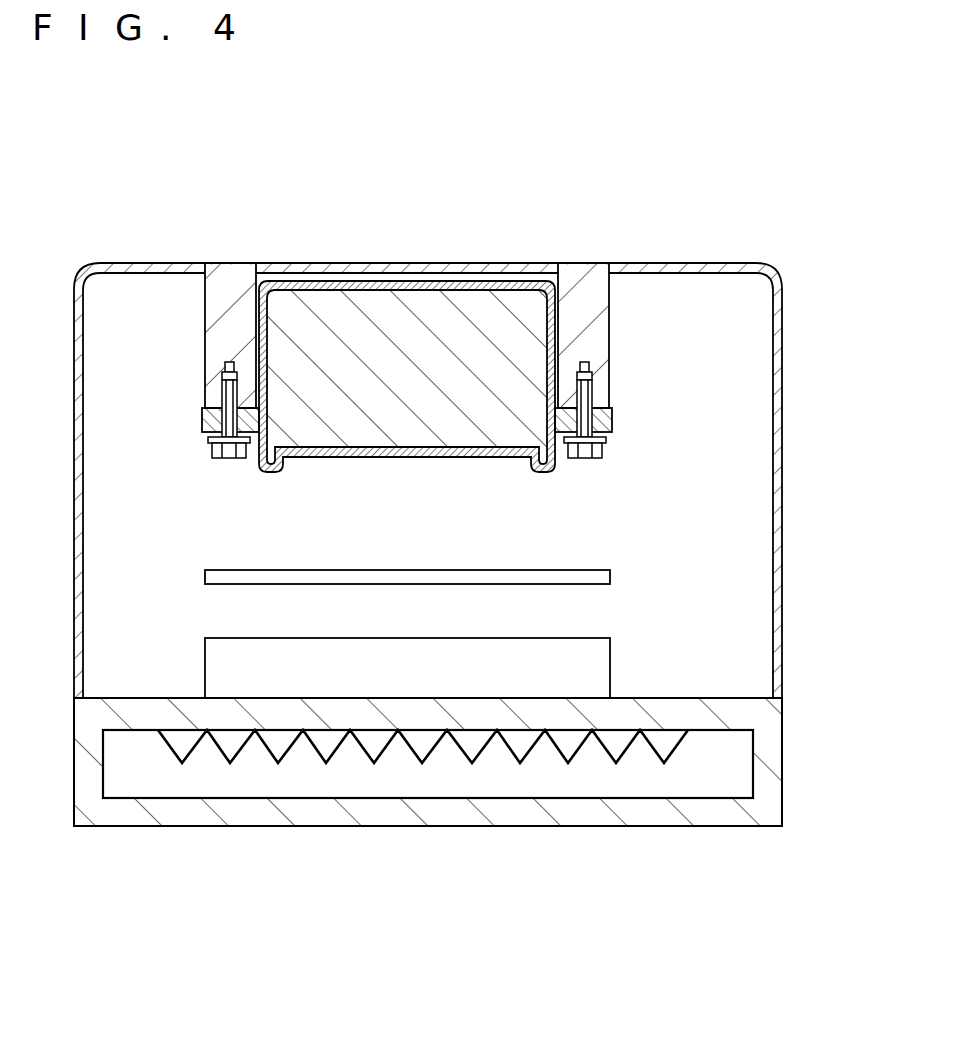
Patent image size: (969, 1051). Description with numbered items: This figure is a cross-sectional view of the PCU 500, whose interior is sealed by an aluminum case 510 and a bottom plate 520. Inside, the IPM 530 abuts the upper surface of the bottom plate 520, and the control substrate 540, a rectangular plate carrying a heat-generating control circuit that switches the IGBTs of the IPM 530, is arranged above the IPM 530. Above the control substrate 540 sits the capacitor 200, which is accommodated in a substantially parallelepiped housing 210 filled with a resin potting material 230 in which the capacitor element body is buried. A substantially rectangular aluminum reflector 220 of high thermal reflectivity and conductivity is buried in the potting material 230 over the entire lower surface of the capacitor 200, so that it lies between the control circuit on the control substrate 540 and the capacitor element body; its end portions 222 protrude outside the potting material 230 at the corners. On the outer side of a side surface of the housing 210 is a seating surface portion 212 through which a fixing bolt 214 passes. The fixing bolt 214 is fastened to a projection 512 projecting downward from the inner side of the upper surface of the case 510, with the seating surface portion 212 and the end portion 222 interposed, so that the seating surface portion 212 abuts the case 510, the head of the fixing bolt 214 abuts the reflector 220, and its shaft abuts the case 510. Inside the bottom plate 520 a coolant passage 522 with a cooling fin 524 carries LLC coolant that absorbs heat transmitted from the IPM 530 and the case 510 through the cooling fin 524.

The PCU 500 is at (392, 165).
The case 510 is at (782, 430).
The projection 512 is at (205, 334).
The capacitor 200 is at (315, 477).
The housing 210 is at (312, 281).
The seating surface portion 212 is at (203, 415).
The fixing bolt 214 is at (228, 458).
The reflector 220 is at (445, 458).
The end portion 222 is at (202, 431).
The potting material 230 is at (422, 322).
The bottom plate 520 is at (782, 752).
The coolant passage 522 is at (637, 776).
The cooling fin 524 is at (440, 739).
The IPM 530 is at (610, 660).
The control substrate 540 is at (610, 578).